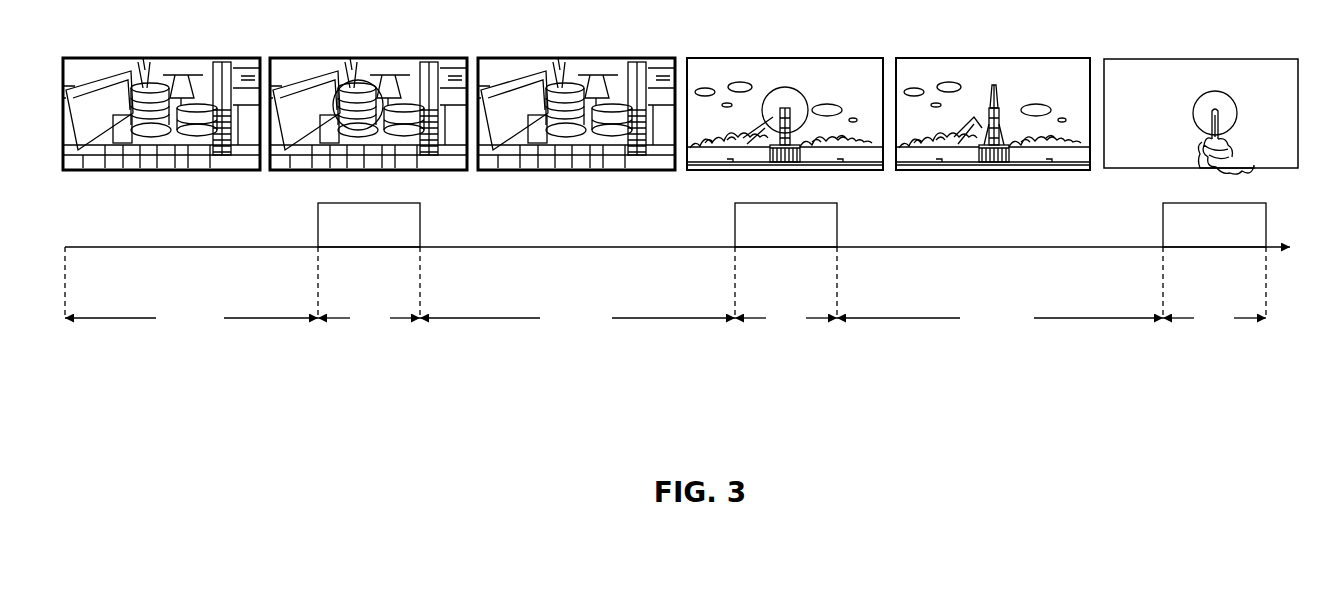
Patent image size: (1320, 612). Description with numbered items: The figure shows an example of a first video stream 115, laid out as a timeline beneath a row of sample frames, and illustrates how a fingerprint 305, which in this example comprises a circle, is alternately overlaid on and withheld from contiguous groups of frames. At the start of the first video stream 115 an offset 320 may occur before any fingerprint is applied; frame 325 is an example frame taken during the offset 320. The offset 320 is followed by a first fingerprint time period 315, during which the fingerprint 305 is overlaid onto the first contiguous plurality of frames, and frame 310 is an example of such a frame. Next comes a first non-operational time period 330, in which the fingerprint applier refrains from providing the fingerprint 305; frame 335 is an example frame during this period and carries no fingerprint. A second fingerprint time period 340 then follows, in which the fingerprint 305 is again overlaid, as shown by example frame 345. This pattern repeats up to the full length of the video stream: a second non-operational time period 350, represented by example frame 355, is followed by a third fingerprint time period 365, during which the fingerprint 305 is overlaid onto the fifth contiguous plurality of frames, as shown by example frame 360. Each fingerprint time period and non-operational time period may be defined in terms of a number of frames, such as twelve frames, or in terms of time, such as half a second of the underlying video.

The first video stream 115 is at (183, 247).
The fingerprint 305 is at (386, 80).
The frame 310 is at (292, 58).
The first fingerprint time period 315 is at (368, 348).
The offset 320 is at (185, 338).
The frame 325 is at (163, 58).
The first non-operational time period 330 is at (585, 343).
The frame 335 is at (573, 58).
The second fingerprint time period 340 is at (788, 343).
The frame 345 is at (842, 58).
The second non-operational time period 350 is at (1005, 343).
The frame 355 is at (978, 58).
The frame 360 is at (1122, 59).
The third fingerprint time period 365 is at (1215, 340).